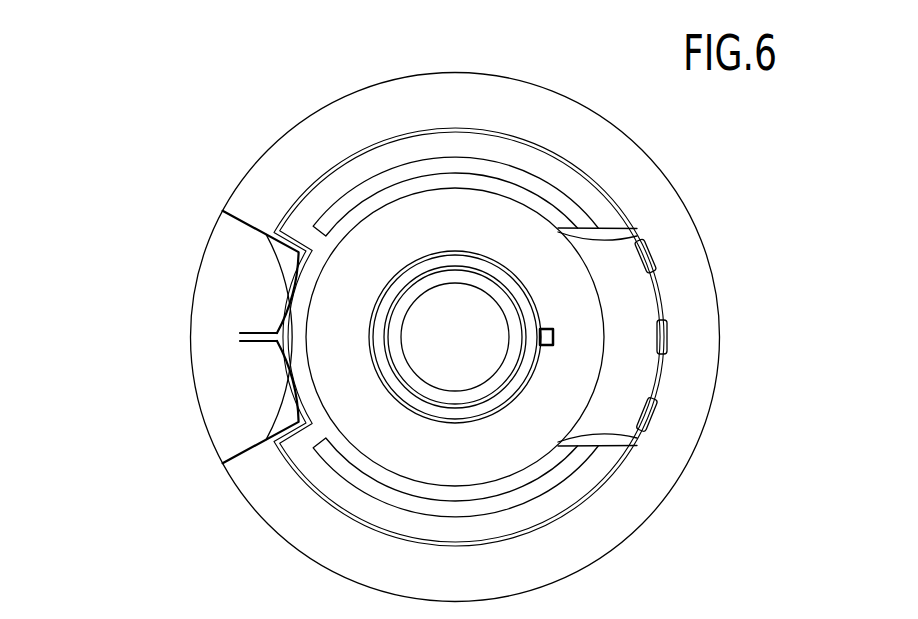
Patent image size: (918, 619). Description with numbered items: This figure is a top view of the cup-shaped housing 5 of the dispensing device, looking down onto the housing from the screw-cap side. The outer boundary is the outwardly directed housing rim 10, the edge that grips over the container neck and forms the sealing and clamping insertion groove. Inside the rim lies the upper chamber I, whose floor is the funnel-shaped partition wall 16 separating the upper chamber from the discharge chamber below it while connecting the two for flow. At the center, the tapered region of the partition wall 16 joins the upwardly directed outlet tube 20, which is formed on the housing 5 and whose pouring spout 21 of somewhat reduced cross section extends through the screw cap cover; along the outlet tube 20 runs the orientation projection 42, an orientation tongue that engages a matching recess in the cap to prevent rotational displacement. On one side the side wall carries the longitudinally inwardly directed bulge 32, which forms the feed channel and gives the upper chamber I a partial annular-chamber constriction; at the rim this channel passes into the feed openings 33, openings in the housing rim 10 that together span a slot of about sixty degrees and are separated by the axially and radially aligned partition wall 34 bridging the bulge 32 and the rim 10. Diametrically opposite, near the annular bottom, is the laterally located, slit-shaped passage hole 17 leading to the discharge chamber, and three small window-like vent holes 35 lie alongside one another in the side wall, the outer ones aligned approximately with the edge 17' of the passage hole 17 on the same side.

The cup-shaped housing 5 is at (240, 513).
The housing rim 10 is at (635, 180).
The partition wall 16 is at (347, 290).
The passage hole 17 is at (551, 337).
The edge of the passage hole 17' is at (672, 382).
The outlet tube 20 is at (405, 265).
The pouring spout 21 is at (481, 275).
The bulge 32 is at (296, 428).
The feed openings 33 is at (263, 290).
The partition wall 34 is at (243, 336).
The vent holes 35 is at (653, 253).
The orientation projection 42 is at (553, 335).
The upper chamber I is at (222, 211).